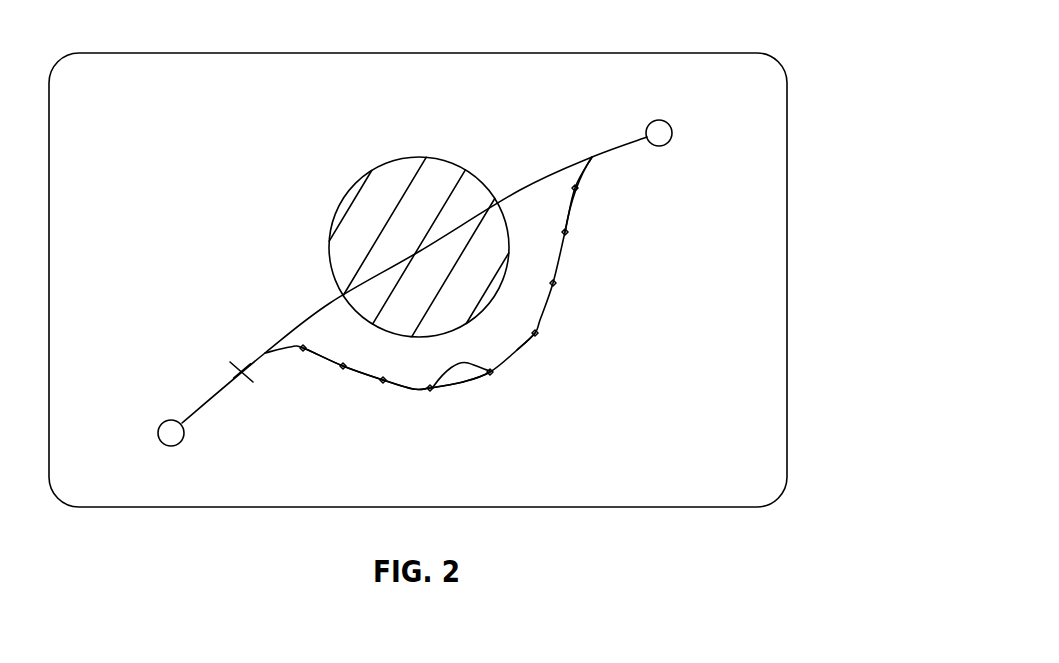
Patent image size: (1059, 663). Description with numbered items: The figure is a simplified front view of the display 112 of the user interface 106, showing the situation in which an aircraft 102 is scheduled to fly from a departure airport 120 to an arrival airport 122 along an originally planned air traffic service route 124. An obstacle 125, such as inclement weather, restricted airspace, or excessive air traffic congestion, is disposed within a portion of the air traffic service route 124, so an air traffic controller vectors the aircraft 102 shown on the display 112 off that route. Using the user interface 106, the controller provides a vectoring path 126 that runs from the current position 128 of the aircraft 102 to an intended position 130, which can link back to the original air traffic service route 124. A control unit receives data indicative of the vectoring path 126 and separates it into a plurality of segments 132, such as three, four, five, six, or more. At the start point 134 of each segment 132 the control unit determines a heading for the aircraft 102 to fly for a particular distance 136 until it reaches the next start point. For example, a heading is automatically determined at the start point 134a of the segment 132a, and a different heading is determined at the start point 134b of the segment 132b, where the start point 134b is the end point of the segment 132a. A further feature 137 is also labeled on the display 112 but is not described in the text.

The aircraft 102 is at (240, 365).
The user interface 106 is at (752, 53).
The display 112 is at (762, 418).
The departure airport 120 is at (158, 430).
The arrival airport 122 is at (670, 126).
The air traffic service route 124 is at (227, 383).
The obstacle 125 is at (420, 155).
The vectoring path 126 is at (535, 357).
The current position 128 is at (268, 363).
The intended position 130 is at (600, 165).
The segments 132 is at (562, 257).
The segment 132a is at (410, 394).
The segment 132b is at (467, 387).
The start point 134 is at (263, 353).
The start point 134a is at (383, 383).
The start point 134b is at (492, 372).
The distance 136 is at (277, 330).
The line segment 137 is at (330, 363).